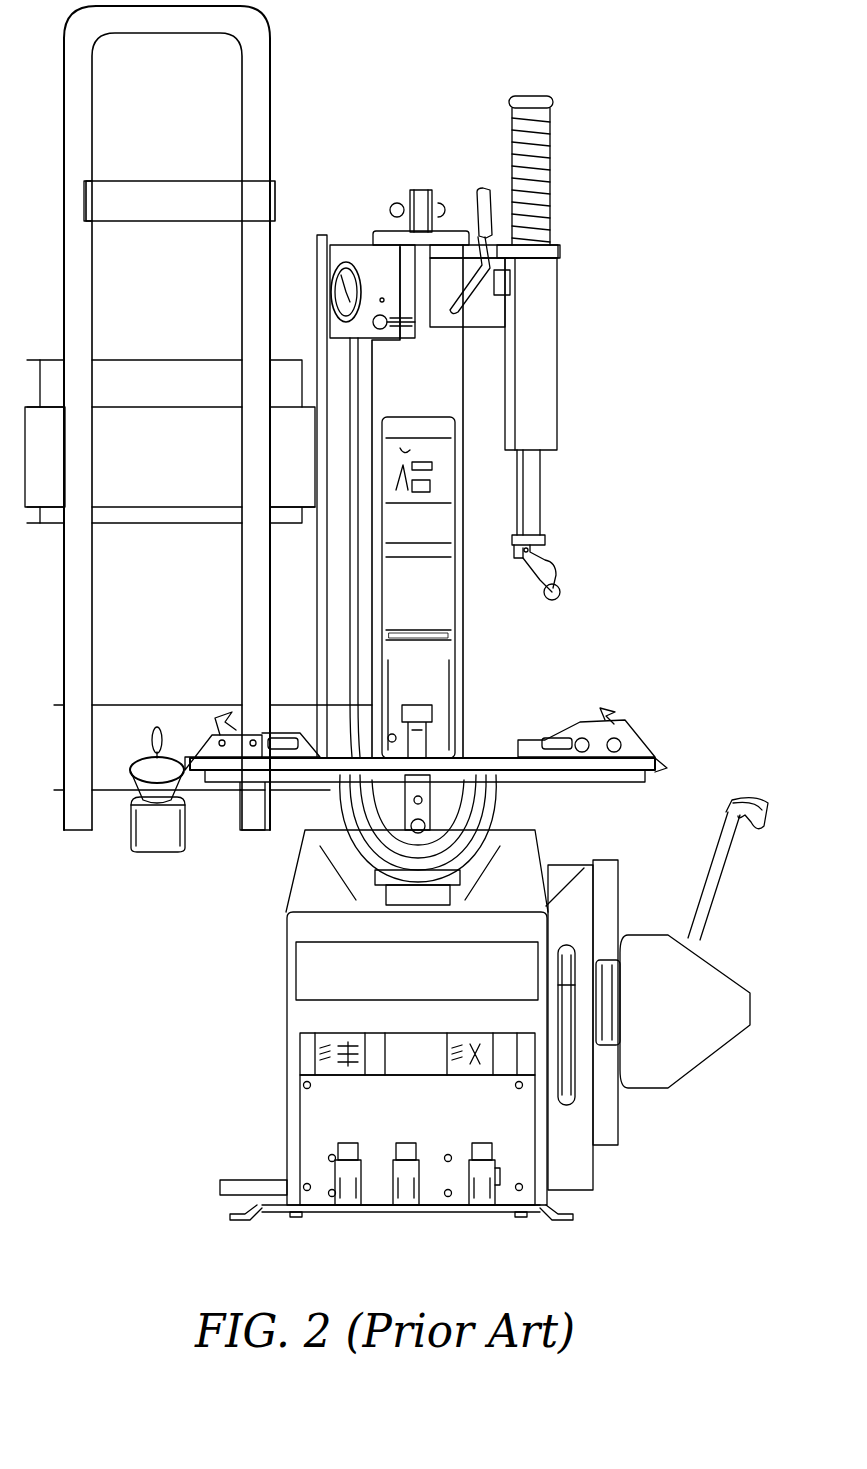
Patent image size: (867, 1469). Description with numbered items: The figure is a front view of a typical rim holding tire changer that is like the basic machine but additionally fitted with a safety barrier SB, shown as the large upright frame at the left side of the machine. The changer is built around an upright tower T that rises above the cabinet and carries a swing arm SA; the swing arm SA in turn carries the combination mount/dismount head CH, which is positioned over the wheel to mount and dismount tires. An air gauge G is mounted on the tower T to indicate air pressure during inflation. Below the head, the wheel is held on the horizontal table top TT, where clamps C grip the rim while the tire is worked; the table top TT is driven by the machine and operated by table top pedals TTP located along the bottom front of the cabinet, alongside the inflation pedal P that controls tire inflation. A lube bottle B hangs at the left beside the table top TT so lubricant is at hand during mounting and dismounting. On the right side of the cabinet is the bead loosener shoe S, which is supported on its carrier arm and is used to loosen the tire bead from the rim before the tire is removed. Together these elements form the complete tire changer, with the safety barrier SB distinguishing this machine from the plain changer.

The safety barrier SB is at (75, 290).
The air gauge G is at (345, 262).
The swing arm SA is at (443, 318).
The tower T is at (455, 545).
The combination mount/dismount head CH is at (562, 590).
The table top TT is at (470, 760).
The clamps C is at (618, 712).
The lube bottle B is at (150, 838).
The bead loosener shoe S is at (685, 1019).
The inflation pedal P is at (238, 1182).
The table top pedals TTP is at (475, 1168).